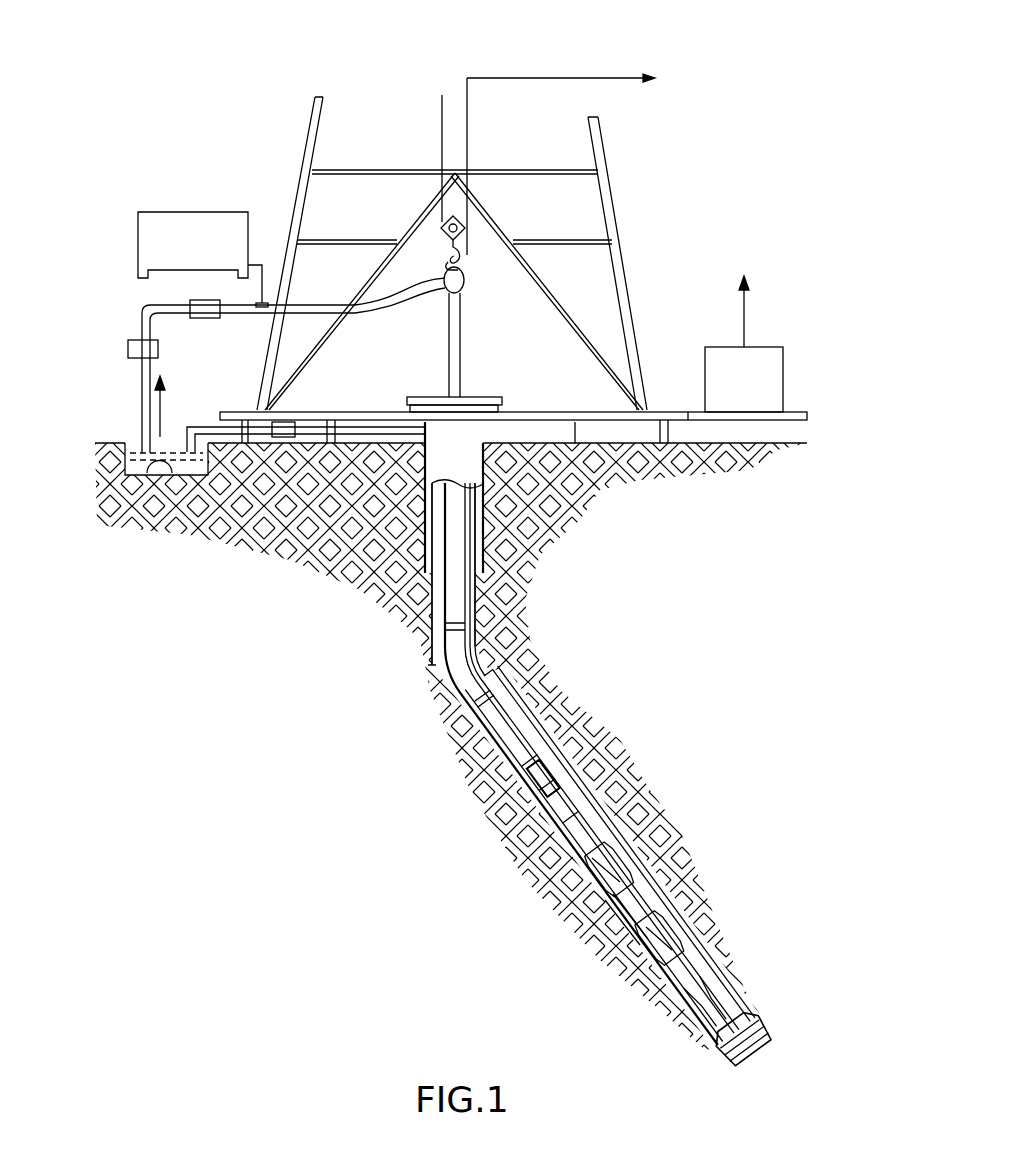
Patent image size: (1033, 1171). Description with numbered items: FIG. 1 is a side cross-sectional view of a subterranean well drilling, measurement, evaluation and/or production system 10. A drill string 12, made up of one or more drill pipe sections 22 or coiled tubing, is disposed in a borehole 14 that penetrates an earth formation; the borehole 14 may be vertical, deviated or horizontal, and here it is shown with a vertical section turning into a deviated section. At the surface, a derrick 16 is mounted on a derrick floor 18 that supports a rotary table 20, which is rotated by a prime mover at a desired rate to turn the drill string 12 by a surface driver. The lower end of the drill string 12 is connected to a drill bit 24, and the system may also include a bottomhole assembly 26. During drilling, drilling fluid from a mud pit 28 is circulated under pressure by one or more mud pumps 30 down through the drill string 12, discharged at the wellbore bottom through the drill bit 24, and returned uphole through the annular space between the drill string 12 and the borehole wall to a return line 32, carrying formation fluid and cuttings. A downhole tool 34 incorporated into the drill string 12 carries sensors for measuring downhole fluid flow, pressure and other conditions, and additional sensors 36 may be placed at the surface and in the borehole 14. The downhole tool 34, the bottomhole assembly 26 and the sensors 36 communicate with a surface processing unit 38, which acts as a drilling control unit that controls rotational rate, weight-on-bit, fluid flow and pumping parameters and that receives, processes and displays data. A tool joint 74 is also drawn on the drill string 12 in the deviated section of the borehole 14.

The well drilling, measurement, evaluation and/or production system 10 is at (200, 95).
The drill string 12 is at (502, 706).
The borehole 14 is at (478, 656).
The derrick 16 is at (627, 232).
The derrick floor 18 is at (662, 412).
The rotary table 20 is at (433, 393).
The drill pipe sections 22 is at (442, 608).
The drill bit 24 is at (762, 1020).
The bottomhole assembly 26 is at (655, 960).
The mud pit 28 is at (156, 478).
The mud pump 30 is at (132, 343).
The return line 32 is at (372, 437).
The downhole tool 34 is at (620, 868).
The sensors 36 is at (550, 786).
The surface processing unit 38 is at (170, 212).
The tool joint 74 is at (466, 702).